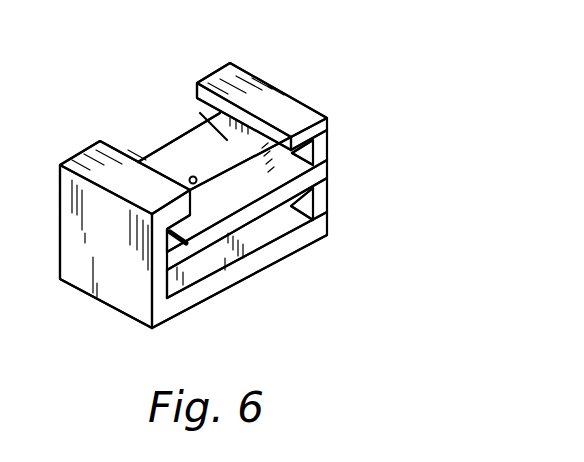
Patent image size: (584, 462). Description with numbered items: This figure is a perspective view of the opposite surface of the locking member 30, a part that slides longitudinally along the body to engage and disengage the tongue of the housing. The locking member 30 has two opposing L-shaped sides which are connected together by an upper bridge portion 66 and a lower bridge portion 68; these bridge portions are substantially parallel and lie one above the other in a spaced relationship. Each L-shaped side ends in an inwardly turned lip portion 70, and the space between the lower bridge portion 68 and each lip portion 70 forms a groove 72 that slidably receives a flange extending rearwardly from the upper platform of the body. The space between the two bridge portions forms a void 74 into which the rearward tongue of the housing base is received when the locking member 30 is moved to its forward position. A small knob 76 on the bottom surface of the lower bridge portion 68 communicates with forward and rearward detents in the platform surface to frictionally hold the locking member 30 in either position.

The locking member 30 is at (352, 173).
The upper bridge portion 66 is at (230, 284).
The lower bridge portion 68 is at (175, 118).
The inwardly turned lip portion 70 is at (122, 182).
The grooves 72 is at (308, 165).
The void 74 is at (267, 230).
The knob 76 is at (193, 176).